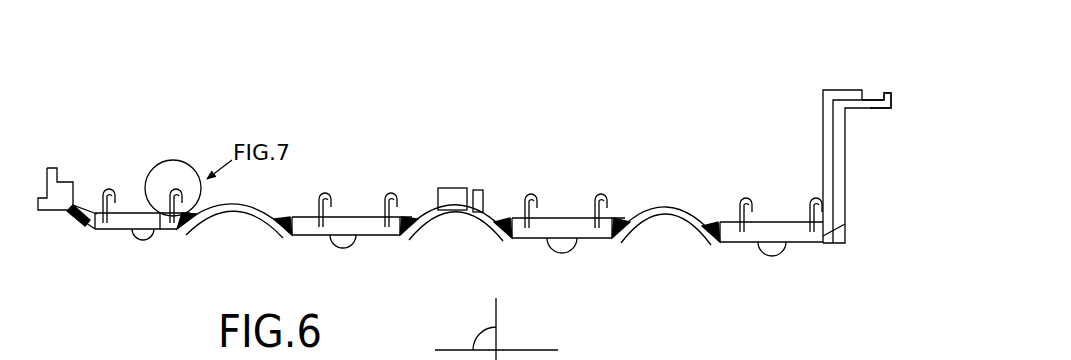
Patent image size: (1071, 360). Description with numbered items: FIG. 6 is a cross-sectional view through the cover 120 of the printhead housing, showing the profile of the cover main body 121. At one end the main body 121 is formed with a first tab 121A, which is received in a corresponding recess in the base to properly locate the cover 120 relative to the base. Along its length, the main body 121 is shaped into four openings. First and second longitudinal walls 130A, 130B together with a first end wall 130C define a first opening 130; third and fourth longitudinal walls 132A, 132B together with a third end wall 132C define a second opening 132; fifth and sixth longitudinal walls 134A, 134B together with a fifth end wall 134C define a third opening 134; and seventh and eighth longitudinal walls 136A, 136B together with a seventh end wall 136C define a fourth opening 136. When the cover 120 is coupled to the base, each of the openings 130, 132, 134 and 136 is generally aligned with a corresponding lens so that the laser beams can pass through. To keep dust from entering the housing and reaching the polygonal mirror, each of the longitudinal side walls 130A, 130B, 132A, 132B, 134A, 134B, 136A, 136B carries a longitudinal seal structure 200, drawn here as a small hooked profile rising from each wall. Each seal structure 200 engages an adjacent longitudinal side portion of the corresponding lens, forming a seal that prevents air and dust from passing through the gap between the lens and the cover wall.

The cover 120 is at (662, 247).
The main body 121 is at (778, 267).
The first tab 121A is at (883, 90).
The first opening 130 is at (771, 185).
The first longitudinal wall 130A is at (803, 243).
The second longitudinal wall 130B is at (732, 234).
The first end wall 130C is at (785, 242).
The second opening 132 is at (563, 168).
The third longitudinal wall 132A is at (607, 222).
The fourth longitudinal wall 132B is at (527, 210).
The third end wall 132C is at (563, 245).
The third opening 134 is at (348, 168).
The fifth longitudinal wall 134A is at (376, 236).
The sixth longitudinal wall 134B is at (330, 233).
The fifth end wall 134C is at (358, 240).
The fourth opening 136 is at (130, 190).
The seventh longitudinal wall 136A is at (157, 229).
The eighth longitudinal wall 136B is at (115, 230).
The seventh end wall 136C is at (143, 235).
The longitudinal seal structure 200 is at (103, 184).